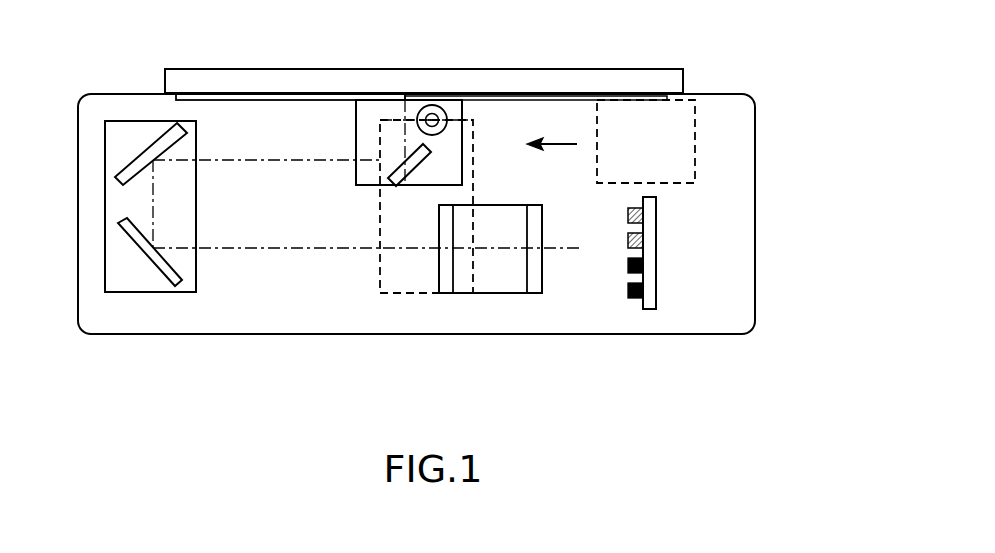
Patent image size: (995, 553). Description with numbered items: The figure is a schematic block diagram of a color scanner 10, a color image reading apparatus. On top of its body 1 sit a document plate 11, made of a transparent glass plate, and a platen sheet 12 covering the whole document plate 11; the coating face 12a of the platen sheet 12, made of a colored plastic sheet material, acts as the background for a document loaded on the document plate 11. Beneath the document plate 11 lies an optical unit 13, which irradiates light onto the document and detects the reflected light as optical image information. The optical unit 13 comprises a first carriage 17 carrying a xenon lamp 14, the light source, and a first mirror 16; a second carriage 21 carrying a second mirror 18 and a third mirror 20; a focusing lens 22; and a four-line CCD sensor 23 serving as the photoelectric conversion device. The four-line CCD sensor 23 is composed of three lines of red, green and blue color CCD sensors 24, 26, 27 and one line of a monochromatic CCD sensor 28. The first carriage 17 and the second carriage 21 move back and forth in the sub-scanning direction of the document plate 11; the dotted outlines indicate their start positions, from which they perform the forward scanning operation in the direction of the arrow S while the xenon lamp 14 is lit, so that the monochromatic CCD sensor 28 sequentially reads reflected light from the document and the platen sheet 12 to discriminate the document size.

The body 1 is at (757, 125).
The color scanner 10 is at (832, 183).
The document plate 11 is at (243, 102).
The platen sheet 12 is at (373, 69).
The coating face 12a is at (510, 96).
The optical unit 13 is at (278, 295).
The xenon lamp 14 is at (437, 106).
The first mirror 16 is at (430, 160).
The first carriage 17 is at (356, 121).
The second mirror 18 is at (140, 155).
The third mirror 20 is at (125, 245).
The second carriage 21 is at (104, 205).
The focusing lens 22 is at (500, 295).
The 4-line CCD sensor 23 is at (657, 265).
The color CCD sensor 24 is at (628, 214).
The color CCD sensor 26 is at (628, 240).
The color CCD sensor 27 is at (628, 265).
The monochromatic CCD sensor 28 is at (628, 292).
The arrow s S is at (557, 146).